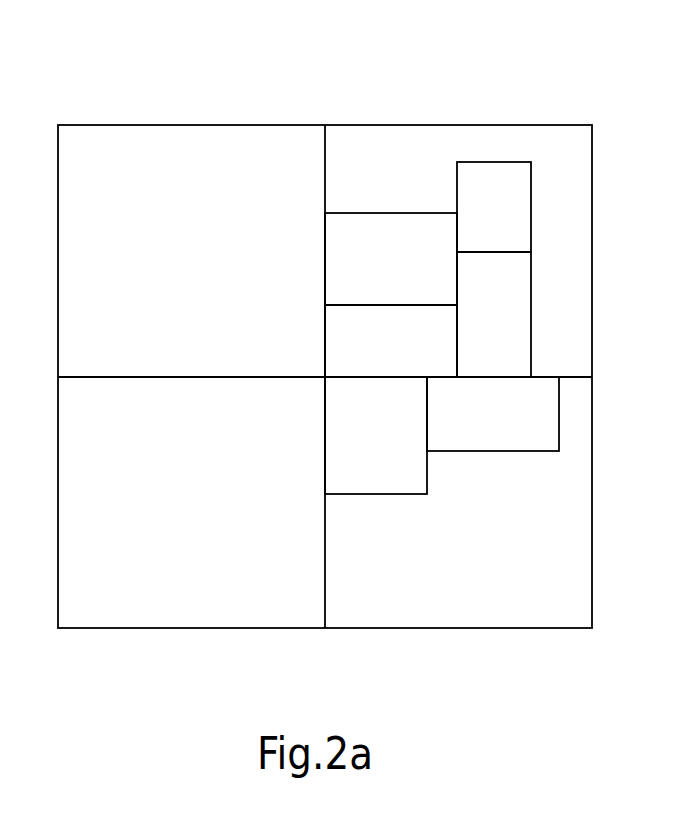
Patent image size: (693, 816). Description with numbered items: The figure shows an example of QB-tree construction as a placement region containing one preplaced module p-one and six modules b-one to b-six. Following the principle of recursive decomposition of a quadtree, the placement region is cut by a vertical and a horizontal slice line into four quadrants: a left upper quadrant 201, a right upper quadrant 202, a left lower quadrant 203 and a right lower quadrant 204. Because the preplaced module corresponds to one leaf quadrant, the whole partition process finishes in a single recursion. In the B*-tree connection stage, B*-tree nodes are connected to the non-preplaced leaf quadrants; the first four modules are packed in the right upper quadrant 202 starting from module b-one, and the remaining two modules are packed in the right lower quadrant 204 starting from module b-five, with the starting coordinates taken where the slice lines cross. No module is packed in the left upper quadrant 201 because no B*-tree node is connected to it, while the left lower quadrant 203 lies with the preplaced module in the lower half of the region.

The left upper quadrant 201 is at (174, 147).
The right upper quadrant 202 is at (399, 157).
The left lower quadrant 203 is at (119, 602).
The right lower quadrant 204 is at (523, 598).